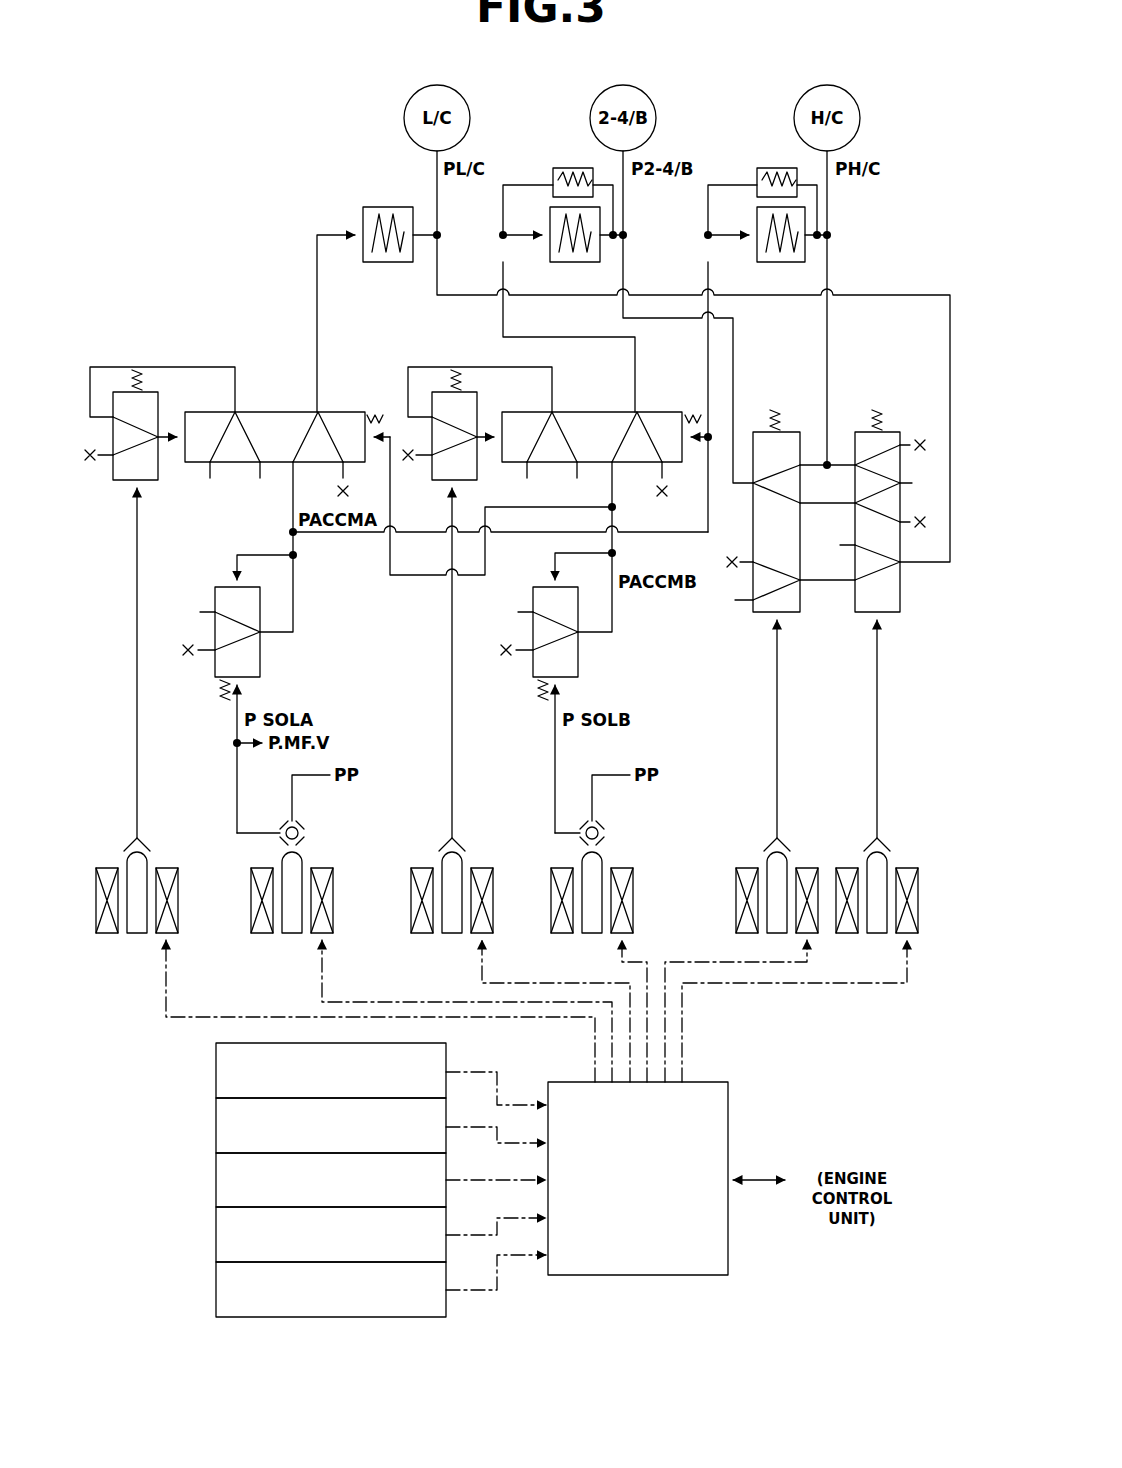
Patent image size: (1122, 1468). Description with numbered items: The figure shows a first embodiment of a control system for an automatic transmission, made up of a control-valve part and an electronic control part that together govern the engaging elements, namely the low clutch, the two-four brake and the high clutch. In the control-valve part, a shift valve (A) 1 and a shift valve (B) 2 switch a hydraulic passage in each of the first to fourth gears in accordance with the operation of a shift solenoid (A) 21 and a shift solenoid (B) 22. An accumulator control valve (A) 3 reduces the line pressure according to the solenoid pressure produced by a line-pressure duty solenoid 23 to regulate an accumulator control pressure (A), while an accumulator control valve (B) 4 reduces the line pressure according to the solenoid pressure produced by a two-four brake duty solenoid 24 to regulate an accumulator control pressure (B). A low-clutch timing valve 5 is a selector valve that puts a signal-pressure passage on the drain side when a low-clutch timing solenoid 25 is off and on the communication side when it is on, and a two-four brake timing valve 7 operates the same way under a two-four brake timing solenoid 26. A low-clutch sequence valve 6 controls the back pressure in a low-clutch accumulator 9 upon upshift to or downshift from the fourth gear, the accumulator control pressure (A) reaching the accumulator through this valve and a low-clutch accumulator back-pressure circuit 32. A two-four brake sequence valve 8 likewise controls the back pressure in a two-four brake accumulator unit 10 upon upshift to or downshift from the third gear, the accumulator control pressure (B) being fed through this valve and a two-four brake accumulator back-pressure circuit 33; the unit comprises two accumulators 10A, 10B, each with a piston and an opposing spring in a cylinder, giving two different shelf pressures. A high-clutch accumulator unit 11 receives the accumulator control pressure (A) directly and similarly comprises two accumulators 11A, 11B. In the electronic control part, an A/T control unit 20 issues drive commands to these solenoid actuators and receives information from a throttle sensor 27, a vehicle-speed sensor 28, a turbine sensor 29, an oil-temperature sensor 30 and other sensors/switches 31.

The shift valve (A) 1 is at (794, 428).
The shift valve (B) 2 is at (894, 428).
The accumulator control valve (A) 3 is at (270, 653).
The accumulator control valve (B) 4 is at (588, 653).
The low-clutch timing valve 5 is at (161, 409).
The low-clutch sequence valve 6 is at (341, 404).
The 2-4 brake timing valve 7 is at (478, 409).
The 2-4 brake sequence valve 8 is at (661, 404).
The low-clutch accumulator 9 is at (388, 205).
The 2-4 brake accumulator unit 10 is at (563, 204).
The accumulator 10A is at (572, 262).
The accumulator 10B is at (554, 172).
The high-clutch accumulator unit 11 is at (767, 204).
The accumulator 11A is at (778, 262).
The accumulator 11B is at (758, 172).
The automatic-transmission (A/T) control unit 20 is at (738, 1110).
The shift solenoid (A) 21 is at (803, 862).
The shift solenoid (B) 22 is at (903, 862).
The line-pressure duty solenoid 23 is at (318, 862).
The 2-4 brake duty solenoid 24 is at (618, 862).
The low-clutch timing solenoid 25 is at (160, 862).
The 2-4 brake timing solenoid 26 is at (478, 862).
The throttle sensor 27 is at (216, 1078).
The vehicle-speed sensor 28 is at (216, 1133).
The turbine sensor 29 is at (216, 1188).
The oil-temperature sensor 30 is at (216, 1243).
The other sensors/switches 31 is at (216, 1298).
The low-clutch accumulator back-pressure circuit 32 is at (317, 300).
The 2-4 brake accumulator back-pressure circuit 33 is at (503, 337).